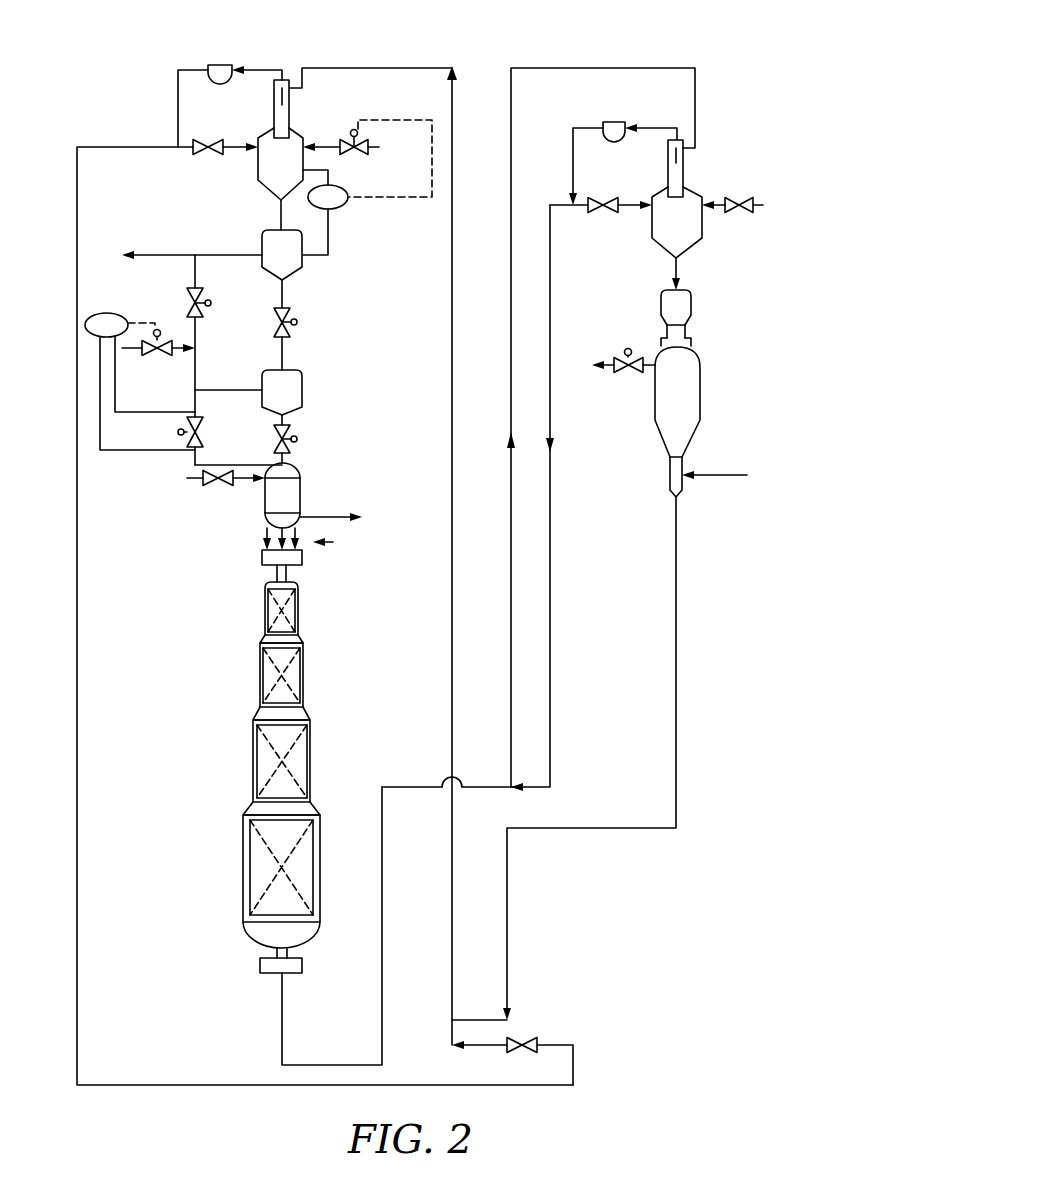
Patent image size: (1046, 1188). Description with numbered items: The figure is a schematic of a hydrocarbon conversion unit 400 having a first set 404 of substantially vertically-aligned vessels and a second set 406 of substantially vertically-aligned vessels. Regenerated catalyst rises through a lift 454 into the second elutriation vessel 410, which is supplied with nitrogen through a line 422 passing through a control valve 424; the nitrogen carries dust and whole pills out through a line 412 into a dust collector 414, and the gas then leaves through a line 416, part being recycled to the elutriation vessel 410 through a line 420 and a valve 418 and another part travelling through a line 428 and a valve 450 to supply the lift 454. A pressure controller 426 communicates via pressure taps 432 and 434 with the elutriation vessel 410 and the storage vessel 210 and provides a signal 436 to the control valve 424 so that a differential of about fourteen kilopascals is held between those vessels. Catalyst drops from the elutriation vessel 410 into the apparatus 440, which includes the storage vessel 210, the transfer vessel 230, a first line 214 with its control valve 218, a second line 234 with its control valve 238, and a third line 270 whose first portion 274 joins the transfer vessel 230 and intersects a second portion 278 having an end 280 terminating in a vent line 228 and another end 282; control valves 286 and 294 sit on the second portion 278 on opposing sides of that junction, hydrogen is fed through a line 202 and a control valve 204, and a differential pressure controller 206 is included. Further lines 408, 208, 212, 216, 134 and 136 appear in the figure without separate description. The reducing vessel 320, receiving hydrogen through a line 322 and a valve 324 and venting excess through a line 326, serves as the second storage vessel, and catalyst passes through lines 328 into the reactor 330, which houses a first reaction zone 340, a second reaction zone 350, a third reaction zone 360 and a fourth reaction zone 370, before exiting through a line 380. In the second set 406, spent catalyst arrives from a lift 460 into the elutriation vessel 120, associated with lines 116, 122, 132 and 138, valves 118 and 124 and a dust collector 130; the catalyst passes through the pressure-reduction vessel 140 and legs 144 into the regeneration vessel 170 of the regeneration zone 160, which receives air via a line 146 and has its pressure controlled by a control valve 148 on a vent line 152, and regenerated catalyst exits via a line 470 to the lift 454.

The hydrocarbon conversion unit 400 is at (98, 67).
The first set of substantially vertically-aligned vessels 404 is at (301, 66).
The second set of substantially vertically-aligned vessels 406 is at (692, 66).
The solids outlet line 408 is at (280, 217).
The second elutriation vessel 410 is at (293, 110).
The line 412 is at (264, 68).
The dust collector 414 is at (220, 64).
The line 416 is at (177, 107).
The valve 418 is at (200, 145).
The line 420 is at (232, 153).
The line 422 is at (379, 147).
The control valve 424 is at (368, 155).
The pressure controller 426 is at (328, 197).
The line 428 is at (79, 722).
The pressure tap 432 is at (332, 182).
The pressure tap 434 is at (330, 233).
The signal 436 is at (395, 118).
The apparatus 440 is at (68, 285).
The valve 450 is at (537, 1040).
The lift 454 is at (385, 66).
The lift 460 is at (603, 66).
The line 470 is at (592, 829).
The storage vessel 210 is at (303, 264).
The first line 214 is at (284, 293).
The control valve 218 is at (297, 325).
The vent line 228 is at (226, 254).
The transfer vessel 230 is at (268, 369).
The second line 234 is at (296, 414).
The control valve 238 is at (292, 433).
The first portion 274 is at (253, 392).
The second portion 278 is at (185, 373).
The end 280 is at (200, 272).
The another end 282 is at (193, 465).
The control valve 286 is at (192, 286).
The control valve 294 is at (178, 436).
The line 202 is at (132, 350).
The control valve 204 is at (173, 338).
The differential pressure controller 206 is at (106, 325).
The gas line 208 is at (150, 413).
The gas line 212 is at (113, 452).
The control signal line 216 is at (138, 322).
The third line 270 is at (157, 324).
The reducing vessel 320 is at (293, 463).
The line 322 is at (192, 480).
The valve 324 is at (231, 487).
The line 326 is at (343, 516).
The lines 328 is at (338, 541).
The reaction vessel 330 is at (269, 761).
The first reaction zone 340 is at (299, 607).
The second reaction zone 350 is at (305, 677).
The third reaction zone 360 is at (312, 760).
The fourth reaction zone 370 is at (321, 868).
The line 380 is at (283, 1016).
The line 116 is at (760, 207).
The valve 118 is at (752, 197).
The elutriation vessel 120 is at (685, 163).
The line 122 is at (581, 208).
The valve 124 is at (616, 213).
The dust collector 130 is at (614, 121).
The line 132 is at (659, 127).
The return line 134 is at (575, 163).
The gas line 136 is at (552, 516).
The line 138 is at (678, 265).
The pressure-reduction vessel 140 is at (692, 307).
The legs 144 is at (707, 335).
The line 146 is at (737, 473).
The control valve 148 is at (617, 356).
The vent line 152 is at (610, 369).
The regeneration zone 160 is at (610, 423).
The regeneration vessel 170 is at (701, 394).